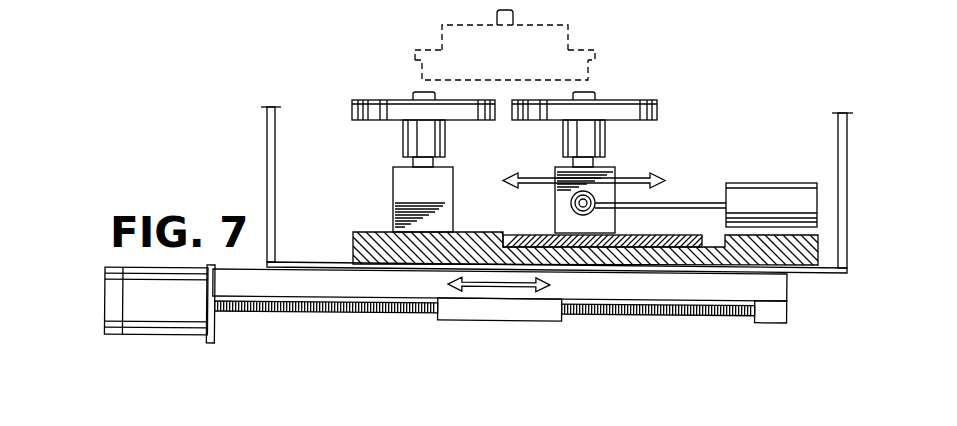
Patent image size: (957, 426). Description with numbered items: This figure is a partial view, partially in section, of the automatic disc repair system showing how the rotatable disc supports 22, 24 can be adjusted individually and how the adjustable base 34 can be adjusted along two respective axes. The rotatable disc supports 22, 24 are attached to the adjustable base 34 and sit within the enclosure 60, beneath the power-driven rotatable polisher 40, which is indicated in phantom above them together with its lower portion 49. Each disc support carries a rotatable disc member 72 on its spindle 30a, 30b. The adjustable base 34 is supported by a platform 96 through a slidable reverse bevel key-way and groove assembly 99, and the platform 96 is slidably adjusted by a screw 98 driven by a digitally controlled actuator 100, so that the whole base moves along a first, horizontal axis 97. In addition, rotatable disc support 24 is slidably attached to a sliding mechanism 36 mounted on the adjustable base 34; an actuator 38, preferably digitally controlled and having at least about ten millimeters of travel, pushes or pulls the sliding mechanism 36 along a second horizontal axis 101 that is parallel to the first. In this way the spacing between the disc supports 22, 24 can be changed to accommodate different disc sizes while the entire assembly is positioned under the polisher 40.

The rotatable disc support 22 is at (393, 196).
The rotatable disc support 24 is at (555, 207).
The first spindle 30a is at (657, 113).
The second spindle 30b is at (352, 112).
The adjustable base 34 is at (353, 242).
The sliding mechanism 36 is at (673, 235).
The actuator 38 is at (812, 198).
The power-driven rotatable polisher 40 is at (583, 50).
The workpiece flange 49 is at (590, 72).
The enclosure 60 is at (263, 122).
The cutting wheel 72 is at (383, 100).
The platform 96 is at (787, 274).
The first axis 97 is at (545, 284).
The screw 98 is at (305, 311).
The slidable reverse bevel key-way and groove assembly 99 is at (463, 318).
The actuator 100 is at (105, 290).
The second axis 101 is at (632, 178).